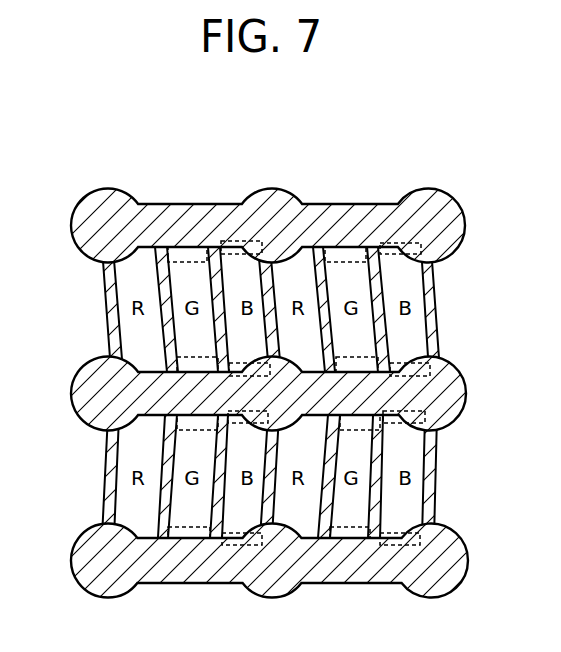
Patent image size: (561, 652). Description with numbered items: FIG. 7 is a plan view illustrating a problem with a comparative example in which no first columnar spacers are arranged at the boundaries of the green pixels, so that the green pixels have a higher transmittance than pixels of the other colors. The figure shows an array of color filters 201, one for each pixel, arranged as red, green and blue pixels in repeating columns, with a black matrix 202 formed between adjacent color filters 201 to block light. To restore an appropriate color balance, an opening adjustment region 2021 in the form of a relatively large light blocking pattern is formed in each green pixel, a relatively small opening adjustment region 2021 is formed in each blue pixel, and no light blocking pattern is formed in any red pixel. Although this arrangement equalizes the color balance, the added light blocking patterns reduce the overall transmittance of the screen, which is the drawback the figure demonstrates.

The color filter 201 is at (133, 288).
The black matrix 202 is at (425, 207).
The opening adjustment region 2021 is at (182, 255).